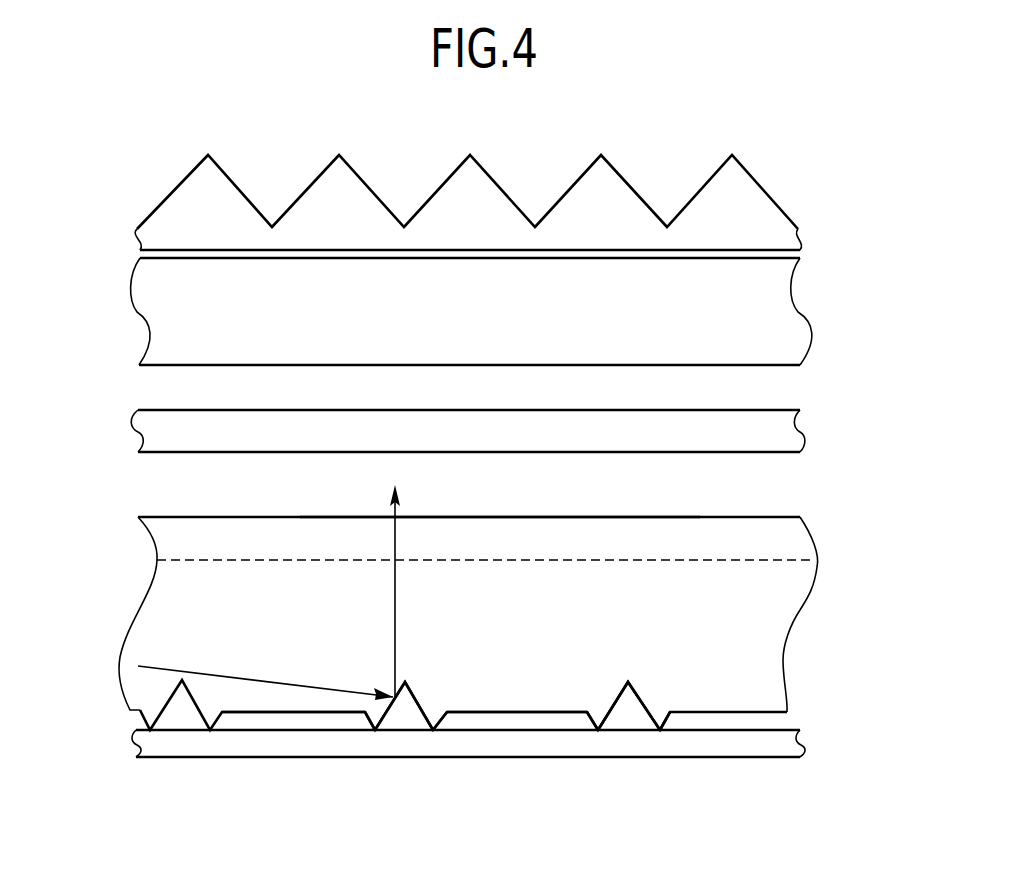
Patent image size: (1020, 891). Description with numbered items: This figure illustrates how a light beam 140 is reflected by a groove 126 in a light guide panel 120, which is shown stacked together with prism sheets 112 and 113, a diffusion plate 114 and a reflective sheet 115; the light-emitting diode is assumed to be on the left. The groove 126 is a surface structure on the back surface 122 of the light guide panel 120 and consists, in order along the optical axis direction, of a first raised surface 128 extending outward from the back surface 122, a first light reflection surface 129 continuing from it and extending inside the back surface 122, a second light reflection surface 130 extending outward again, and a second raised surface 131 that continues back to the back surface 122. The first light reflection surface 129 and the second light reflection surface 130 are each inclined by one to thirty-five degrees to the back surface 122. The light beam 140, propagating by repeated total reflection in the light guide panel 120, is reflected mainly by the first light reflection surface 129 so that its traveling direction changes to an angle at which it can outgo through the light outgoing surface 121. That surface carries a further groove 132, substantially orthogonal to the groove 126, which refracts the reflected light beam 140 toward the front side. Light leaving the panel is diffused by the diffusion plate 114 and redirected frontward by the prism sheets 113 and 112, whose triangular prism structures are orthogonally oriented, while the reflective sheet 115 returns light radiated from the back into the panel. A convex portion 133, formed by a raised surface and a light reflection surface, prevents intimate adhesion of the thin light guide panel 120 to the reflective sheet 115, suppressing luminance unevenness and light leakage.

The prism sheet 112 is at (800, 240).
The prism sheet 113 is at (812, 335).
The diffusion plate 114 is at (806, 438).
The reflective sheet 115 is at (806, 748).
The light guide panel 120 is at (788, 615).
The light outgoing surface 121 is at (168, 517).
The back surface 122 is at (512, 712).
The groove 126 is at (626, 716).
The first raised surface 128 is at (363, 716).
The first light reflection surface 129 is at (387, 716).
The second light reflection surface 130 is at (412, 730).
The second raised surface 131 is at (450, 730).
The groove 132 is at (750, 560).
The convex portion 133 is at (597, 716).
The light beam 140 is at (280, 686).